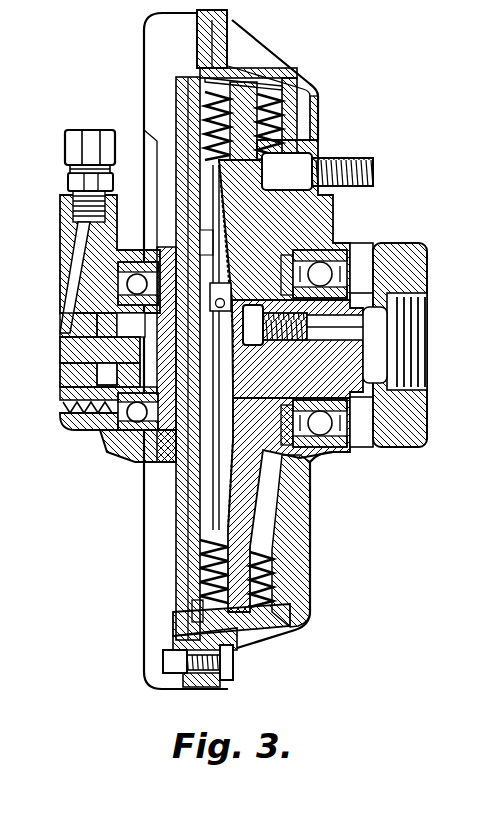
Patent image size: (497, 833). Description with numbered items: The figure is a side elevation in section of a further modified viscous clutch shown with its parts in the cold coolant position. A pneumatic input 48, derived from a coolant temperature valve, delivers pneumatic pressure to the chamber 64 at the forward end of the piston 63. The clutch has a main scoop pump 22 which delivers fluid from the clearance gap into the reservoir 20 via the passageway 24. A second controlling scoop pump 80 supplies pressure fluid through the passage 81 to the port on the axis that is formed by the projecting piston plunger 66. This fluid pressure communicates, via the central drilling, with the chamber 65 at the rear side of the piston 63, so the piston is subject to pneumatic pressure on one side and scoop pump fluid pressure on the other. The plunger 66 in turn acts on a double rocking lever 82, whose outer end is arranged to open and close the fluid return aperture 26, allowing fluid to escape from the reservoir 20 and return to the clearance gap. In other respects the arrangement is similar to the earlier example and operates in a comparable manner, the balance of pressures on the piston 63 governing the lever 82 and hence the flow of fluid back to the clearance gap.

The reservoir 20 is at (207, 478).
The main scoop pump 22 is at (193, 610).
The passageway 24 is at (187, 552).
The fluid return aperture 26 is at (235, 166).
The pneumatic input 48 is at (90, 140).
The piston 63 is at (100, 348).
The chamber 64 is at (107, 376).
The chamber 65 is at (98, 329).
The piston plunger 66 is at (170, 477).
The second controlling scoop pump 80 is at (207, 74).
The passage 81 is at (190, 119).
The double rocking lever 82 is at (213, 242).